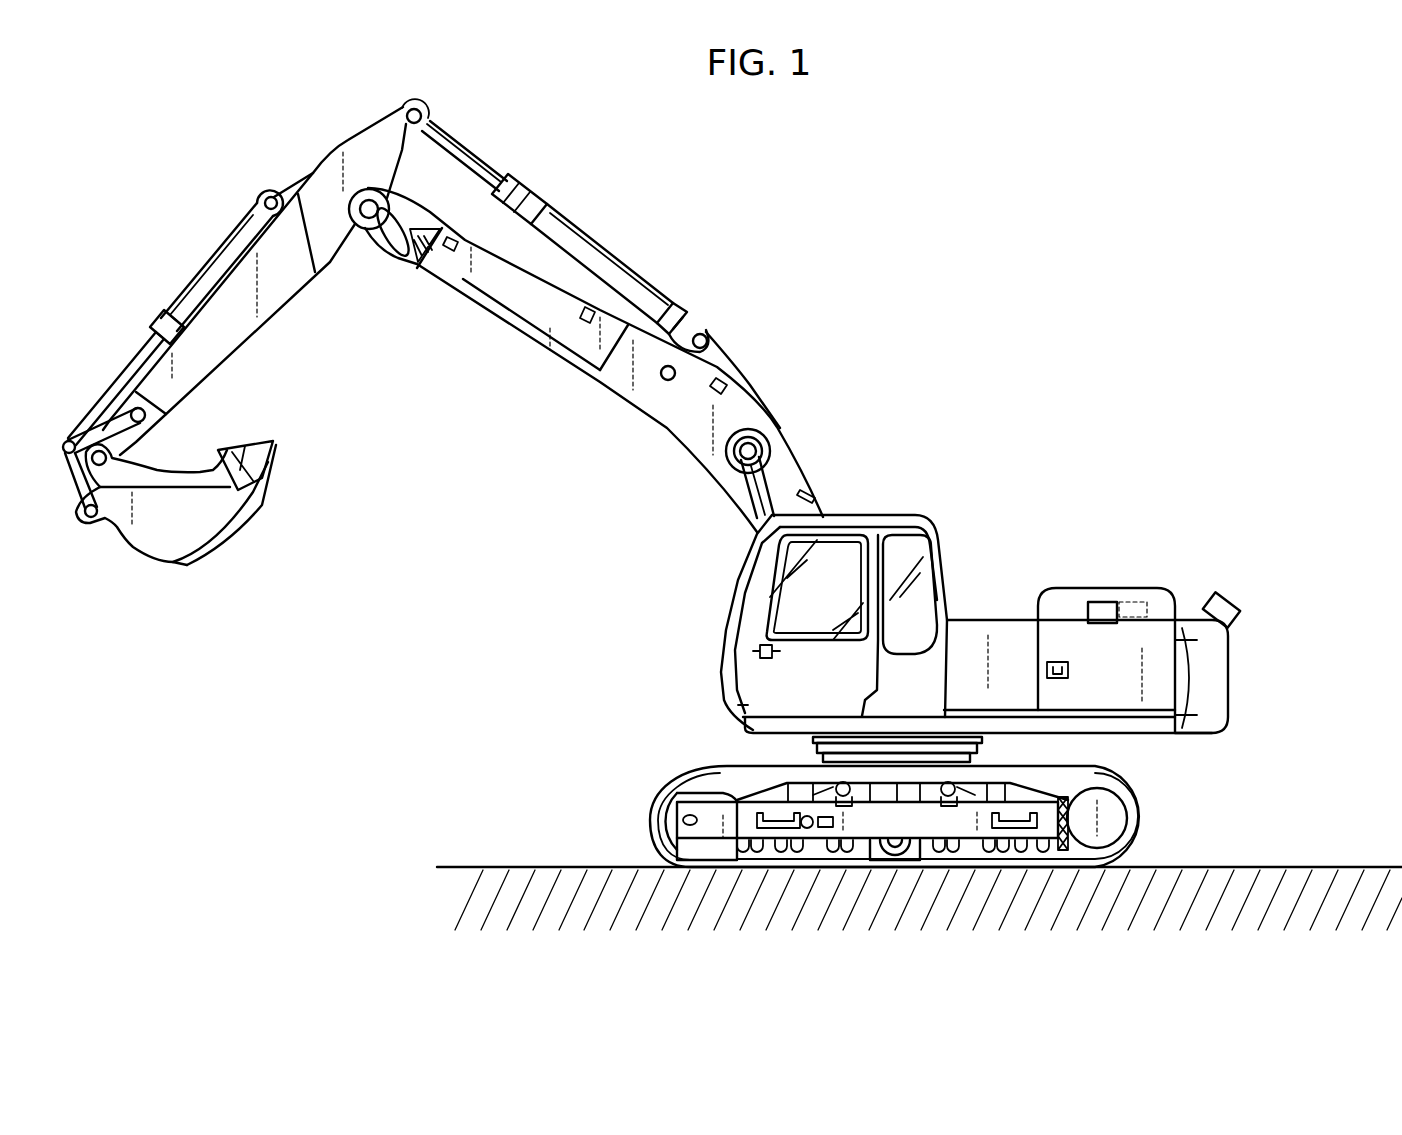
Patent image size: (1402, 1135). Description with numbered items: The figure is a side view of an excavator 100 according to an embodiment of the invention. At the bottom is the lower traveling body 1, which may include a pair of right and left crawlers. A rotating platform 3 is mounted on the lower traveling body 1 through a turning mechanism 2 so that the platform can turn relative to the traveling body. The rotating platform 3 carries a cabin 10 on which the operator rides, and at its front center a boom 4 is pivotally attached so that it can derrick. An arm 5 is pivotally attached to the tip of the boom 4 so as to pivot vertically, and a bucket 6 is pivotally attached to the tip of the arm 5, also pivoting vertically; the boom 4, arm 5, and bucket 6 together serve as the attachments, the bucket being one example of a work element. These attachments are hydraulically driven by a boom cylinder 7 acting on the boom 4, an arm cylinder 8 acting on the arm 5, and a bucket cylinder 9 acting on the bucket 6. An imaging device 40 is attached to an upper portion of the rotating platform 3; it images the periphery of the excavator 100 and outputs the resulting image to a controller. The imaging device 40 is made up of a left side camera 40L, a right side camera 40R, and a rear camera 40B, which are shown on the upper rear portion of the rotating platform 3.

The excavator 100 is at (978, 333).
The lower traveling body 1 is at (647, 822).
The turning mechanism 2 is at (977, 754).
The rotating platform 3 is at (980, 625).
The boom 4 is at (645, 397).
The arm 5 is at (280, 297).
The bucket 6 is at (162, 547).
The boom cylinder 7 is at (755, 498).
The arm cylinder 8 is at (620, 277).
The bucket cylinder 9 is at (207, 280).
The cabin 10 is at (915, 513).
The imaging device 40 is at (1090, 488).
The left side camera 40L is at (1097, 603).
The right side camera 40R is at (1140, 602).
The rear camera 40B is at (1230, 603).